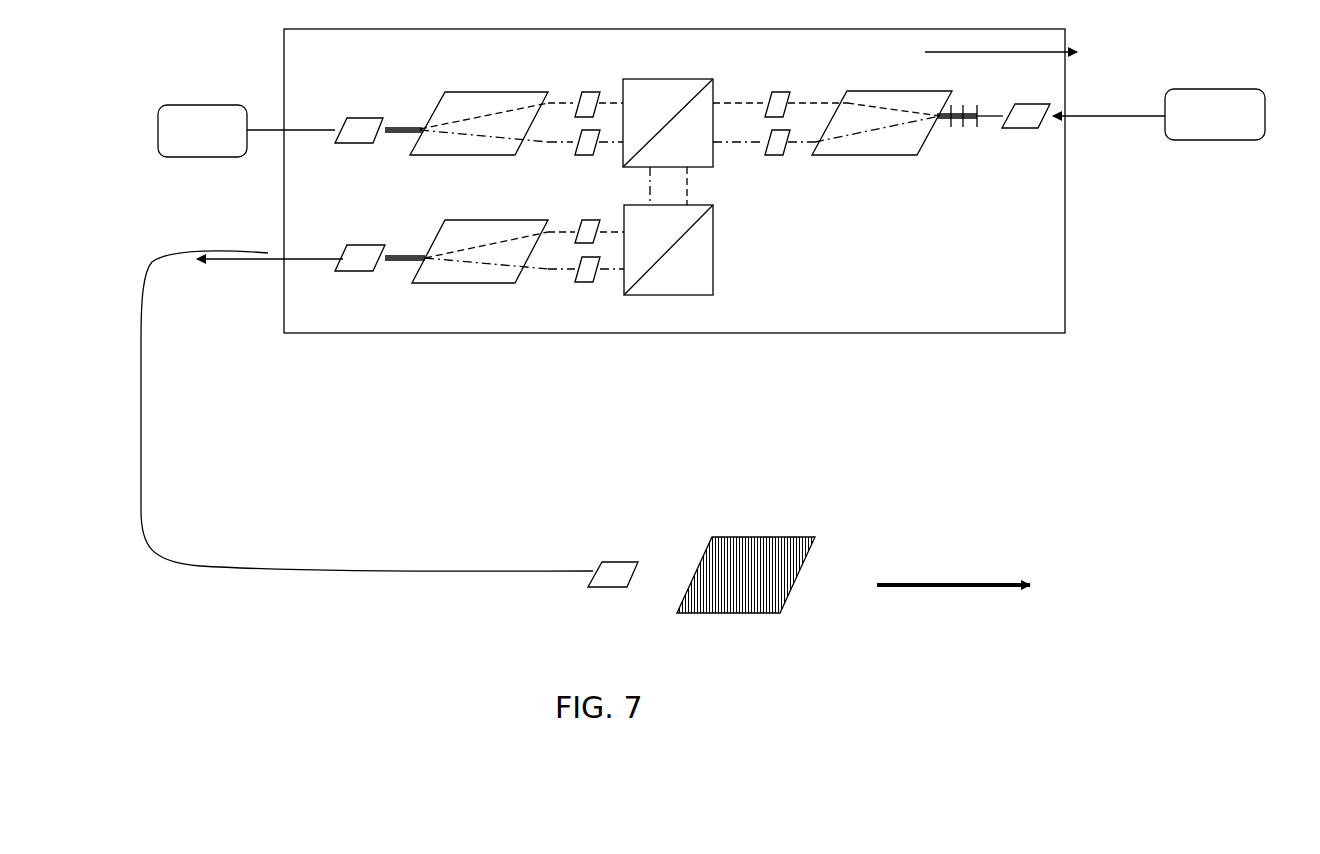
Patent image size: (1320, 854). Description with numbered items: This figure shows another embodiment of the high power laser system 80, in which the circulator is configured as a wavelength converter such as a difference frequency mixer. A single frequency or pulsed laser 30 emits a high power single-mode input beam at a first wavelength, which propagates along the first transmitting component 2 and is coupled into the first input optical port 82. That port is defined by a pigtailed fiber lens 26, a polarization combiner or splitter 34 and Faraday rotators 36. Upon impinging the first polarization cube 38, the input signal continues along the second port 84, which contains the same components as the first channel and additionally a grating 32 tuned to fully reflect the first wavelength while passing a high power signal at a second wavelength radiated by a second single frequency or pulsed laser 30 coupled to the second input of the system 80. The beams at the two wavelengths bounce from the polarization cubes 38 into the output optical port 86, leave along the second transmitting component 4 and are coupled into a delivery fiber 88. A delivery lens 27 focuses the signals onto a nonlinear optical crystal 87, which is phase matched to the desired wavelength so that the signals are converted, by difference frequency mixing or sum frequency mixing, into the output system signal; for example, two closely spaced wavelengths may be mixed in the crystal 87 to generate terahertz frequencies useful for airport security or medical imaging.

The first transmitting component 2 is at (297, 128).
The second transmitting component 4 is at (298, 245).
The pigtailed fiber lens 26 is at (347, 130).
The delivery lens 27 is at (627, 559).
The single frequency or pulsed laser 30 is at (200, 133).
The grating 32 is at (965, 127).
The polarization combiner or splitter 34 is at (487, 105).
The Faraday rotators 36 is at (775, 98).
The polarization cube 38 is at (648, 103).
The system 80 is at (1078, 268).
The first input optical port 82 is at (385, 103).
The second port 84 is at (825, 103).
The output optical port 86 is at (537, 283).
The nonlinear optical crystal 87 is at (727, 547).
The delivery fiber 88 is at (133, 424).